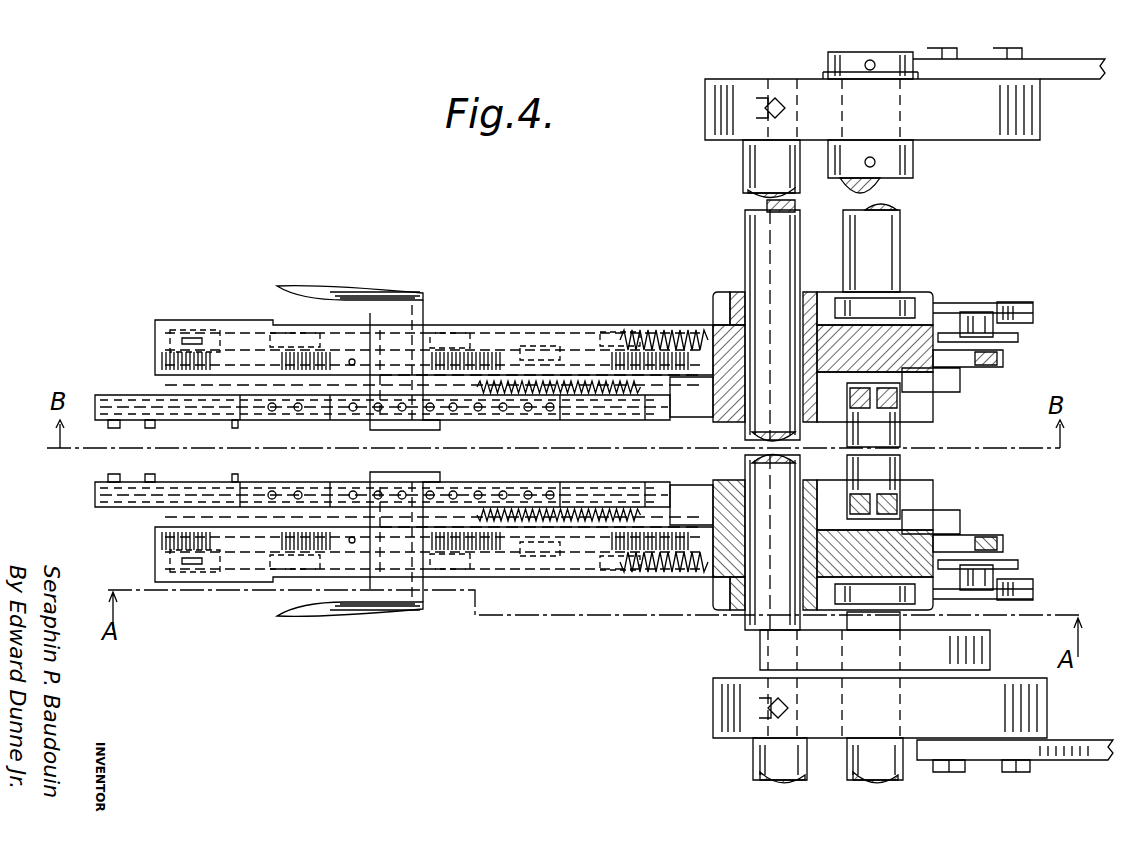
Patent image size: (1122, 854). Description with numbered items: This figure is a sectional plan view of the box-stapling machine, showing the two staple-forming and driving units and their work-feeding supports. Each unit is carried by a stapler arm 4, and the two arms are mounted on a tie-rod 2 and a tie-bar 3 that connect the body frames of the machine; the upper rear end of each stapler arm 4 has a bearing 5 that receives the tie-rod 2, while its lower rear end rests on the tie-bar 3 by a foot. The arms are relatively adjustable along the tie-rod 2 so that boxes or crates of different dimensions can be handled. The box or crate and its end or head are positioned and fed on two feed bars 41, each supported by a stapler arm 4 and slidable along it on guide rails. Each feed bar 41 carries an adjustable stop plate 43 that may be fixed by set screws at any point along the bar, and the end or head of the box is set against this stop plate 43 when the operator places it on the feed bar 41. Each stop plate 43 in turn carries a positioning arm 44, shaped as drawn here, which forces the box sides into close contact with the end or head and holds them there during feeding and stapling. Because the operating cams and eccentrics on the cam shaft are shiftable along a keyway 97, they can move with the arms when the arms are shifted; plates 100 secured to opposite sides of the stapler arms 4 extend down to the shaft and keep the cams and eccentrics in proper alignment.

The tie-rod 2 is at (743, 150).
The tie-bar 3 is at (732, 168).
The stapler arm 4 is at (253, 363).
The bearing 5 is at (745, 278).
The feed bar 41 is at (100, 408).
The adjustable stop plate 43 is at (368, 424).
The positioning arm 44 is at (341, 294).
The keyway 97 is at (876, 246).
The plate 100 is at (832, 290).